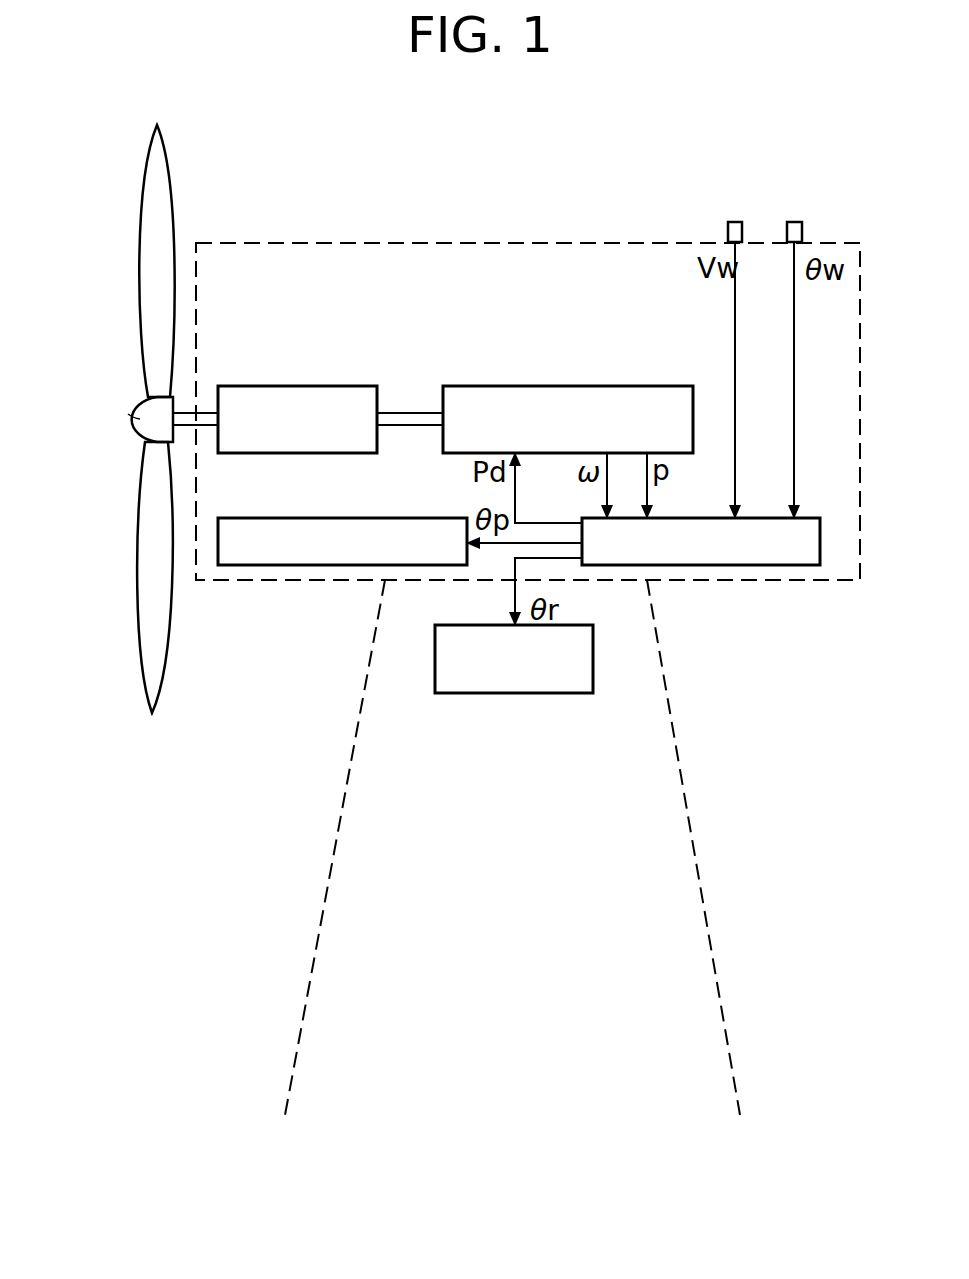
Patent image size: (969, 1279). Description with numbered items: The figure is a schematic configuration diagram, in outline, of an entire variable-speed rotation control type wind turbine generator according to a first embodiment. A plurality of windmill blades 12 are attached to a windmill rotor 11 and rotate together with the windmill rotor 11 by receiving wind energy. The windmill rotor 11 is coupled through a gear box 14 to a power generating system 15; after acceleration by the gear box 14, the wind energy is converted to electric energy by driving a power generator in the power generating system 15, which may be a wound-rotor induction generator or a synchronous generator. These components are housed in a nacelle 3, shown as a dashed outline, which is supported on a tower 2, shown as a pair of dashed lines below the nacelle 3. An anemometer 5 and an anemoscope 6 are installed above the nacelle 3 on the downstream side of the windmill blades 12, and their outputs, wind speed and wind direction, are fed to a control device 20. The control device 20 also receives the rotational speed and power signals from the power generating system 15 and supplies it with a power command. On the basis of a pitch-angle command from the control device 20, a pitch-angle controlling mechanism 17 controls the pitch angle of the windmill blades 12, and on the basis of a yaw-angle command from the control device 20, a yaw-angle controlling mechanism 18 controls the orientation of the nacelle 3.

The tower 2 is at (690, 822).
The nacelle 3 is at (442, 243).
The anemometer 5 is at (736, 222).
The anemoscope 6 is at (791, 222).
The windmill rotor 11 is at (130, 414).
The windmill blade 12 is at (140, 216).
The gear box 14 is at (327, 386).
The power generating system 15 is at (610, 386).
The pitch-angle controlling mechanism 17 is at (402, 518).
The yaw-angle controlling mechanism 18 is at (545, 695).
The control device 20 is at (800, 565).